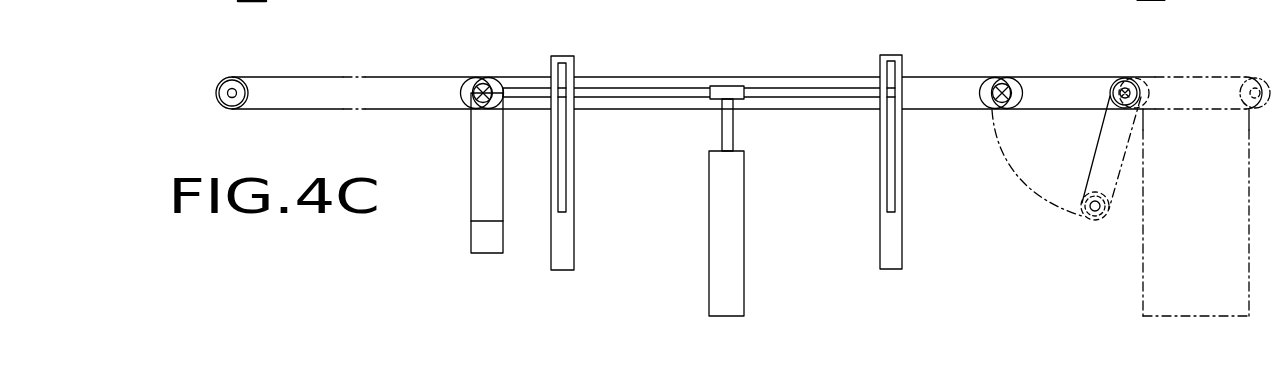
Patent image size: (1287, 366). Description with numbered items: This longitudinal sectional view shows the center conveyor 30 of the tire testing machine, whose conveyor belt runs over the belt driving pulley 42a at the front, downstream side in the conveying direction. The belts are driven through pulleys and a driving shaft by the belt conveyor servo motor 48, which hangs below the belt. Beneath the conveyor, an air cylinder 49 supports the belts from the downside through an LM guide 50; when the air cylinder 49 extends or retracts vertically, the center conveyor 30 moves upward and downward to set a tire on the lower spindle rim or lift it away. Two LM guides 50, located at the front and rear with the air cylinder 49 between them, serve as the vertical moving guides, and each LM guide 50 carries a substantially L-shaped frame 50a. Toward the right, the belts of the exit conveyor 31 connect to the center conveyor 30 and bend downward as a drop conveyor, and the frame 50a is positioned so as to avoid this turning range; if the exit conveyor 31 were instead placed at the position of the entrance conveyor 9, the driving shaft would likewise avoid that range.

The entrance conveyor 9 is at (373, 62).
The center conveyor 30 is at (718, 160).
The exit conveyor 31 is at (1231, 61).
The belt driving pulley 42a is at (993, 77).
The belt conveyor servo motor 48 is at (471, 236).
The air cylinder 49 is at (745, 245).
The LM guide 50 is at (574, 243).
The frame 50a is at (642, 88).